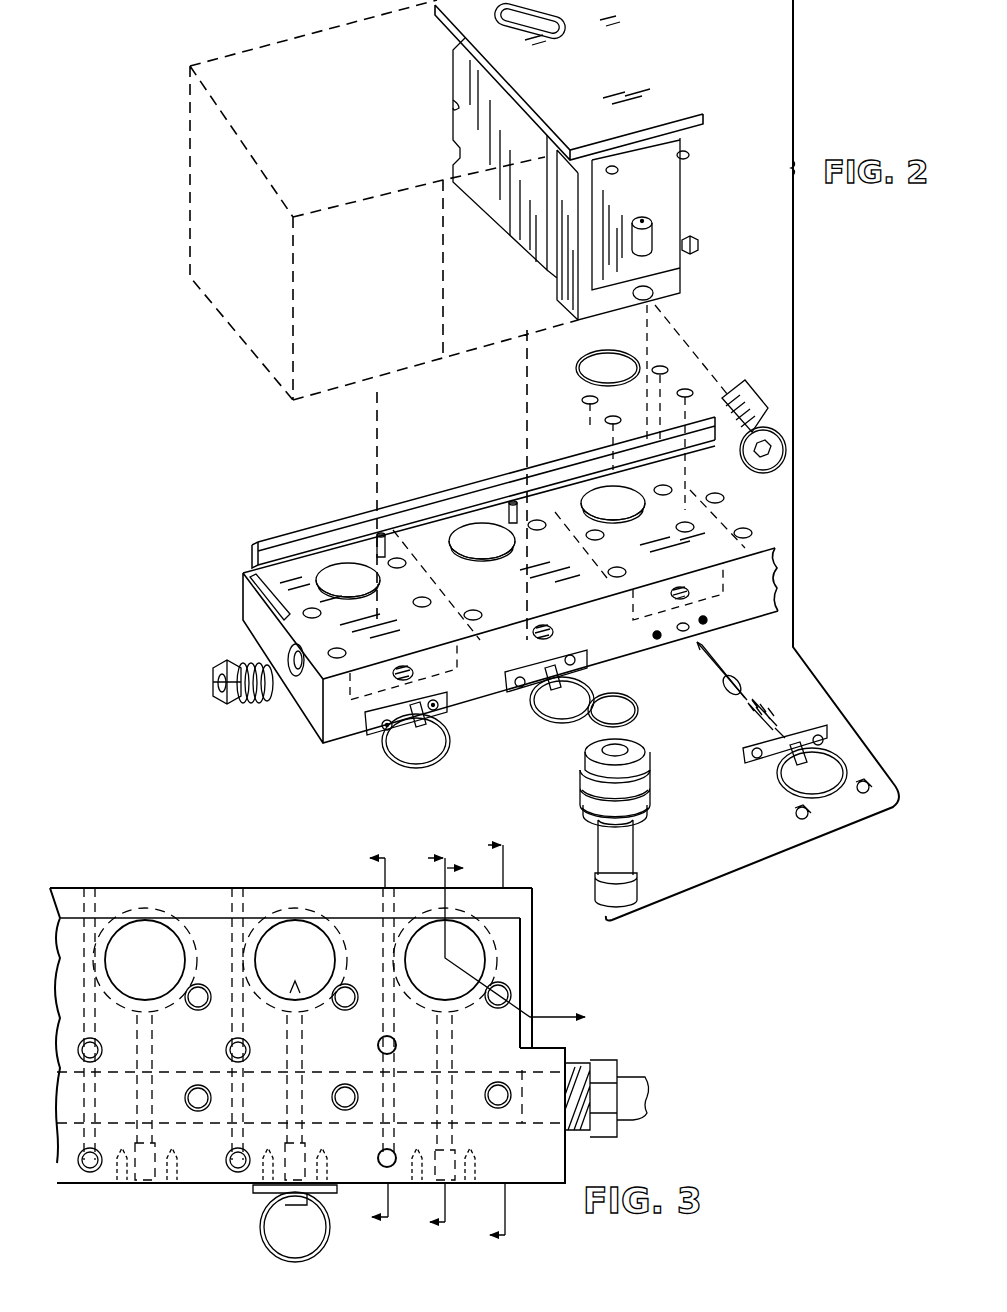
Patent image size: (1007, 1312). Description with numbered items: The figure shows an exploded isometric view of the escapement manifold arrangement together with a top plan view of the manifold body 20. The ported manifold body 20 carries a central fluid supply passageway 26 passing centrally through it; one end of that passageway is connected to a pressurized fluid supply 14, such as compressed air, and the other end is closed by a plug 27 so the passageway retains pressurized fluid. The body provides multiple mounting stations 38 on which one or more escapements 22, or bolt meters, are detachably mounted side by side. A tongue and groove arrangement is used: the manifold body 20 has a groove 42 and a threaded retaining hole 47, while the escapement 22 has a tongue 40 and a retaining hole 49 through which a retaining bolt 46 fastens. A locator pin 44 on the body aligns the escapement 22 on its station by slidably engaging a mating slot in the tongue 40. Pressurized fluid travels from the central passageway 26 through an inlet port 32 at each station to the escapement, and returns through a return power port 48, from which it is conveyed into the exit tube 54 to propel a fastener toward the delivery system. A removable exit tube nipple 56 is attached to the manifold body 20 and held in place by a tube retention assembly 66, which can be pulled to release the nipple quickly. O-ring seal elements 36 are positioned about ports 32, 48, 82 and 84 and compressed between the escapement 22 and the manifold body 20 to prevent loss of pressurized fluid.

In FIG. 3, the pressurized fluid supply 14 is at (638, 1082).
In FIG. 2, the manifold body 20 is at (243, 598).
In FIG. 3, the manifold body 20 is at (532, 992).
In FIG. 2, the escapement 22 is at (664, 72).
In FIG. 2, the central fluid supply passageway 26 is at (298, 680).
In FIG. 2, the plug 27 is at (226, 704).
In FIG. 2, the inlet port 32 is at (548, 630).
In FIG. 3, the inlet port 32 is at (508, 1104).
In FIG. 2, the seal element 36 is at (668, 370).
In FIG. 2, the mounting station 38 is at (410, 552).
In FIG. 2, the tongue 40 is at (452, 178).
In FIG. 2, the groove 42 is at (256, 556).
In FIG. 3, the groove 42 is at (532, 910).
In FIG. 2, the locator pin 44 is at (511, 502).
In FIG. 2, the retaining bolt 46 is at (756, 425).
In FIG. 2, the threaded retaining hole 47 is at (690, 592).
In FIG. 2, the return power port 48 is at (540, 522).
In FIG. 3, the return power port 48 is at (503, 987).
In FIG. 2, the retaining hole 49 is at (650, 298).
In FIG. 2, the exit tube 54 is at (487, 530).
In FIG. 3, the exit tube 54 is at (425, 960).
In FIG. 2, the exit tube nipple 56 is at (627, 848).
In FIG. 2, the tube retention assembly 66 is at (818, 727).
In FIG. 3, the tube retention assembly 66 is at (262, 1237).
In FIG. 2, the port 82 is at (450, 576).
In FIG. 3, the port 82 is at (378, 1047).
In FIG. 2, the port 84 is at (480, 614).
In FIG. 3, the port 84 is at (380, 1157).